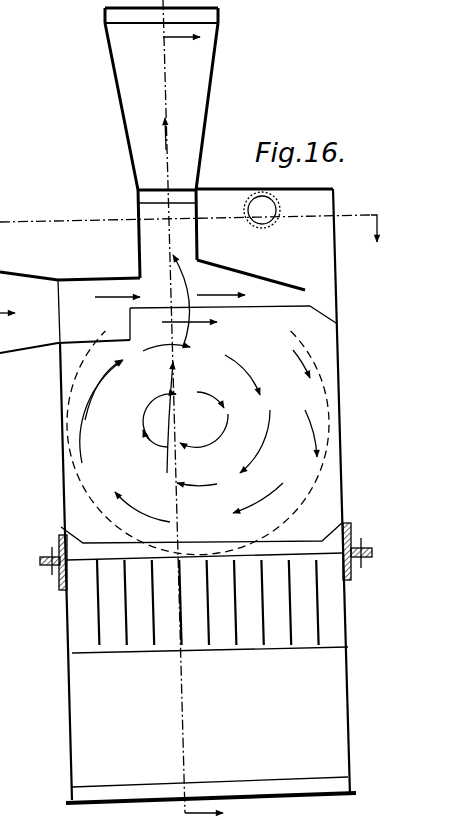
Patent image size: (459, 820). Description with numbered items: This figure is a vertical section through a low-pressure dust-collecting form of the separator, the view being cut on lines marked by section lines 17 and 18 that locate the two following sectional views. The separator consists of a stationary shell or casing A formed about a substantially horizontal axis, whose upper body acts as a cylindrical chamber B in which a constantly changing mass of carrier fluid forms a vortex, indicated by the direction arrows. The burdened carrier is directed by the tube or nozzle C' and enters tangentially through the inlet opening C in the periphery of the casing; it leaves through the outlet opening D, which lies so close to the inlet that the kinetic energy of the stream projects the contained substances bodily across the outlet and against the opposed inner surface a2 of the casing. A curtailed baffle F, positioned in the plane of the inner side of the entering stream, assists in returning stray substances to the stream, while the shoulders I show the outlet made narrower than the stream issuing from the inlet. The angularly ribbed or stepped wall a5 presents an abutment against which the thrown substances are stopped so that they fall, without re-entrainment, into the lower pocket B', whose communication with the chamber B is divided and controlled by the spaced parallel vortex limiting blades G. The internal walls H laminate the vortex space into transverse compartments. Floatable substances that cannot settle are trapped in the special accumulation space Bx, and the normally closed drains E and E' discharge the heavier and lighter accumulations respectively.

The stationary shell or casing A is at (340, 432).
The chamber or container B is at (202, 445).
The pocket B' is at (210, 663).
The special accumulation space Bx is at (264, 233).
The inlet opening C is at (141, 326).
The tube or nozzle C' is at (70, 278).
The outlet opening D is at (139, 241).
The drain or opening E is at (210, 774).
The drain or opening E' is at (274, 220).
The deflecting surface or baffle F is at (88, 346).
The vortex limiting members G is at (230, 607).
The internal walls H is at (158, 537).
The shoulders I is at (230, 270).
The inner surface of the casing a2 is at (275, 293).
The angularly ribbed or stepped wall a5 is at (338, 318).
The section line 17— 17 is at (188, 406).
The section line 18— 18 is at (205, 222).